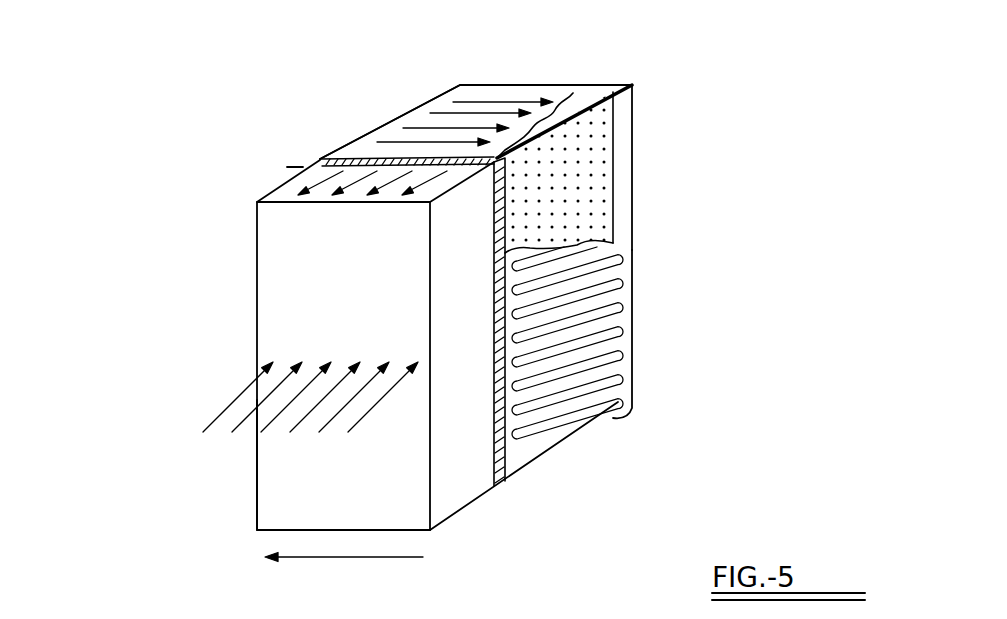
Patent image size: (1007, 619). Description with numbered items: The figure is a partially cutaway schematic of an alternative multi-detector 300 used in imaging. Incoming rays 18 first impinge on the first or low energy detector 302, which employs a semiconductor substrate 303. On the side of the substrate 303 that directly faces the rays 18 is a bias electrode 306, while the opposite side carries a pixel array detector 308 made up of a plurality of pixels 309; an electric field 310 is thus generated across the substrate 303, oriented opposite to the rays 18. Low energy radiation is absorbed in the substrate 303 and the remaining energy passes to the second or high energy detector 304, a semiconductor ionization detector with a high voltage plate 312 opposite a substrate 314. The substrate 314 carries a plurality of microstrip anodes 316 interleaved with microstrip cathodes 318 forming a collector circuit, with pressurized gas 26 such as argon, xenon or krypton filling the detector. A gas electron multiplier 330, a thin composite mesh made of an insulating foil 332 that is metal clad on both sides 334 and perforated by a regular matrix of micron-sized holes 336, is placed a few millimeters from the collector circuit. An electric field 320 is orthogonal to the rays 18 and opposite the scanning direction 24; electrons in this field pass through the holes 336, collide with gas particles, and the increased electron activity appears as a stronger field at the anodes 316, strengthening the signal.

The multi-detector 300 is at (200, 95).
The first or low energy detector 302 is at (275, 184).
The semiconductor substrate 303 is at (280, 480).
The second or high energy detector 304 is at (360, 136).
The bias electrode 306 is at (297, 283).
The pixel array detector 308 is at (322, 161).
The pixels 309 is at (503, 487).
The electric field 310 is at (322, 168).
The high voltage plate 312 is at (462, 85).
The substrate 314 is at (632, 415).
The microstrip anodes 316 is at (615, 255).
The microstrip cathodes 318 is at (615, 292).
The electric field 320 is at (504, 101).
The gas electron multiplier 330 is at (620, 80).
The insulating foil 332 is at (620, 180).
The metal clad sides 334 is at (606, 133).
The holes 336 is at (601, 113).
The rays 18 is at (225, 407).
The scanning direction 24 is at (323, 557).
The pressurized gas 26 is at (392, 132).